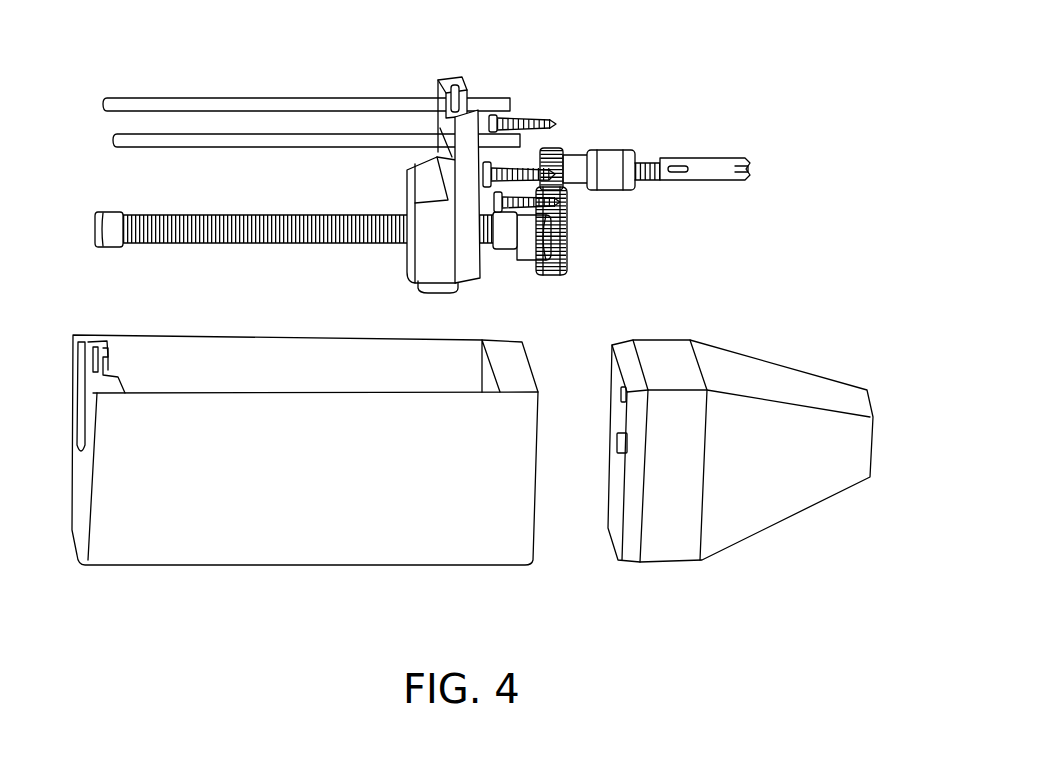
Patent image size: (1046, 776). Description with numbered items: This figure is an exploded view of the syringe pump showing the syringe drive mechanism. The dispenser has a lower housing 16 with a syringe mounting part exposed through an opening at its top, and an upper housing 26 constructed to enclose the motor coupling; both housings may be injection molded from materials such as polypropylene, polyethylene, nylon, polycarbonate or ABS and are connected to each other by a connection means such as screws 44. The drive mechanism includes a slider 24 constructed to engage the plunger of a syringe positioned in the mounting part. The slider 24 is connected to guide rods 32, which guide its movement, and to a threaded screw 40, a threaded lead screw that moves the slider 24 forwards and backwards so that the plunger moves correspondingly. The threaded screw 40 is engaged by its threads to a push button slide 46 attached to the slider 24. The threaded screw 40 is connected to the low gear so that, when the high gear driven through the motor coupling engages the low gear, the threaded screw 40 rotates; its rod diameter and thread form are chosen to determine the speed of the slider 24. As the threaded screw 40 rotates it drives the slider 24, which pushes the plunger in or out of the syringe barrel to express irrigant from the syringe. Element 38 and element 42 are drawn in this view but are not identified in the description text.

The lower housing 16 is at (215, 524).
The slider 24 is at (474, 109).
The upper housing 26 is at (755, 513).
The guide rods 32 is at (234, 131).
The lead screw head 38 is at (106, 249).
The threaded screw 40 is at (279, 241).
The hub 42 is at (502, 248).
The screws 44 is at (522, 159).
The push button slide 46 is at (426, 290).